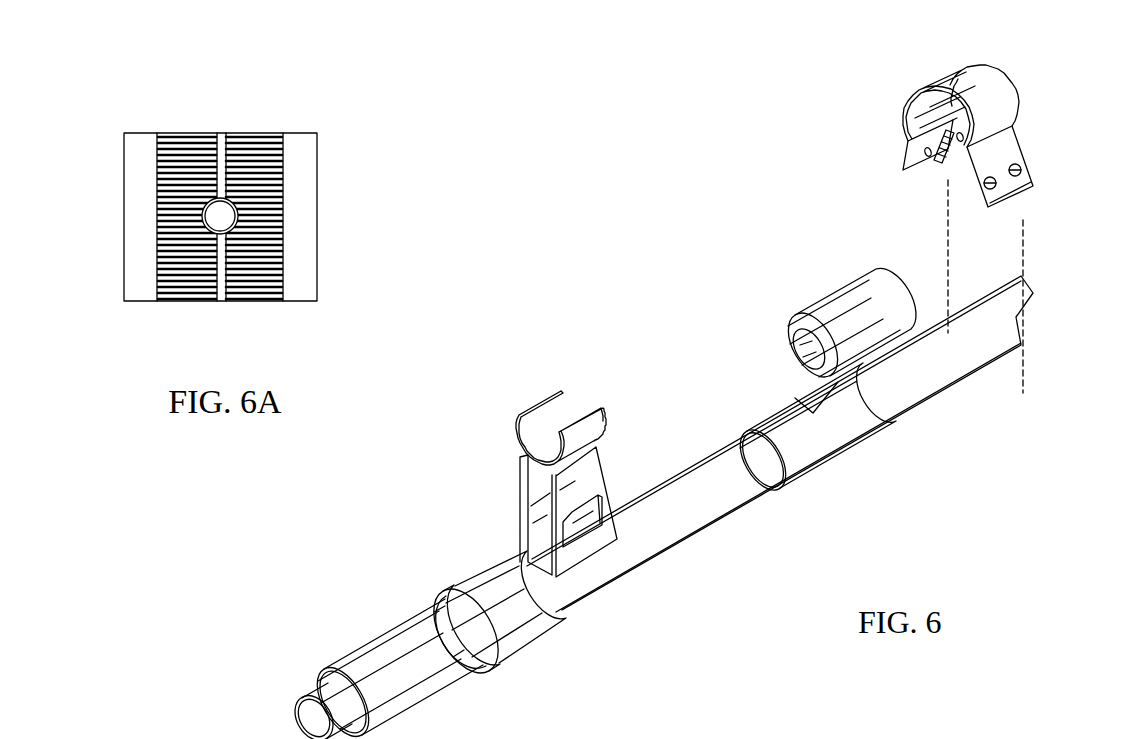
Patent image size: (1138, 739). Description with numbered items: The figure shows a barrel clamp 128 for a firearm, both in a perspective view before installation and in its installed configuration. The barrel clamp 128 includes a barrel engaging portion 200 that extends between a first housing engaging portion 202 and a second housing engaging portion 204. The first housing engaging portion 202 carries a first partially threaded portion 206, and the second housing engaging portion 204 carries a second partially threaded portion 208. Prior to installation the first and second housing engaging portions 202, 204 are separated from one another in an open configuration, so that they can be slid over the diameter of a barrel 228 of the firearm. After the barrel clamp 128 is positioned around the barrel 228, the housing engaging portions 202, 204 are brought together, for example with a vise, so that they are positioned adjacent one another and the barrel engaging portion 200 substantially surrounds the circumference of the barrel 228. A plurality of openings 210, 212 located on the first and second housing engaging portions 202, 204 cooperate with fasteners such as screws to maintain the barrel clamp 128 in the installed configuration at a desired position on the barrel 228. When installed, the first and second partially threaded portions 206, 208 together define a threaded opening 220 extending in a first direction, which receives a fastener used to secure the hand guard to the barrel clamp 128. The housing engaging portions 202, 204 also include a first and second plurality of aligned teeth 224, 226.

In FIG. 6A, the barrel clamp 128 is at (222, 188).
In FIG. 6, the barrel clamp 128 is at (962, 146).
In FIG. 6, the barrel engaging portion 200 is at (1003, 93).
In FIG. 6A, the first housing engaging portion 202 is at (300, 132).
In FIG. 6, the first housing engaging portion 202 is at (1017, 192).
In FIG. 6A, the second housing engaging portion 204 is at (142, 132).
In FIG. 6, the second housing engaging portion 204 is at (908, 155).
In FIG. 6A, the first partially threaded portion 206 is at (232, 220).
In FIG. 6A, the second partially threaded portion 208 is at (233, 207).
In FIG. 6, the second partially threaded portion 208 is at (947, 163).
In FIG. 6, the openings 210 is at (1027, 168).
In FIG. 6, the openings 212 is at (958, 135).
In FIG. 6A, the threaded opening 220 is at (207, 213).
In FIG. 6A, the first plurality of aligned teeth 224 is at (253, 293).
In FIG. 6A, the second plurality of aligned teeth 226 is at (192, 273).
In FIG. 6, the barrel 228 is at (688, 473).